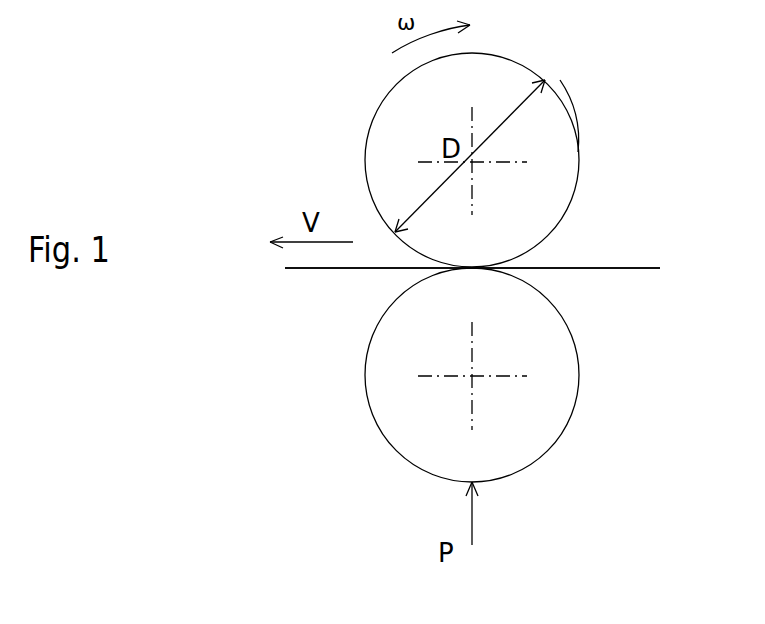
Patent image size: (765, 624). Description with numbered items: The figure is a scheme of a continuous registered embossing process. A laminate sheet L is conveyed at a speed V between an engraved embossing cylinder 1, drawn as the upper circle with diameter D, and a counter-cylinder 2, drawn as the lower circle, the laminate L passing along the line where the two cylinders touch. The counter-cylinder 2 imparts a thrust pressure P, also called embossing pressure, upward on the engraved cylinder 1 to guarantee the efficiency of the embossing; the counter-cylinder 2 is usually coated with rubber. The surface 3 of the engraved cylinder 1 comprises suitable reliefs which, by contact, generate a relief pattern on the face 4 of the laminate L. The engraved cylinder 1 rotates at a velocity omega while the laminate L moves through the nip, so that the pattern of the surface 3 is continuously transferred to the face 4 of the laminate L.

The engraved embossing cylinder 1 is at (498, 62).
The counter-cylinder 2 is at (498, 468).
The surface of the engraved cylinder 3 is at (578, 152).
The face of laminate 4 is at (643, 267).
The laminate sheet L is at (592, 267).